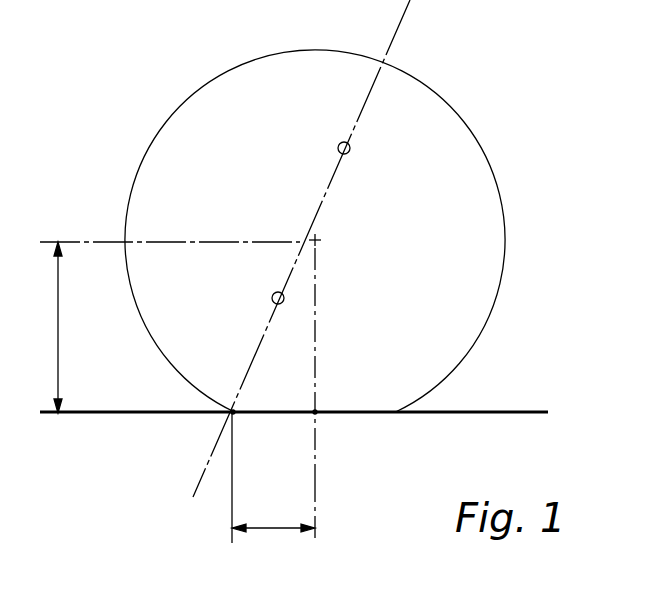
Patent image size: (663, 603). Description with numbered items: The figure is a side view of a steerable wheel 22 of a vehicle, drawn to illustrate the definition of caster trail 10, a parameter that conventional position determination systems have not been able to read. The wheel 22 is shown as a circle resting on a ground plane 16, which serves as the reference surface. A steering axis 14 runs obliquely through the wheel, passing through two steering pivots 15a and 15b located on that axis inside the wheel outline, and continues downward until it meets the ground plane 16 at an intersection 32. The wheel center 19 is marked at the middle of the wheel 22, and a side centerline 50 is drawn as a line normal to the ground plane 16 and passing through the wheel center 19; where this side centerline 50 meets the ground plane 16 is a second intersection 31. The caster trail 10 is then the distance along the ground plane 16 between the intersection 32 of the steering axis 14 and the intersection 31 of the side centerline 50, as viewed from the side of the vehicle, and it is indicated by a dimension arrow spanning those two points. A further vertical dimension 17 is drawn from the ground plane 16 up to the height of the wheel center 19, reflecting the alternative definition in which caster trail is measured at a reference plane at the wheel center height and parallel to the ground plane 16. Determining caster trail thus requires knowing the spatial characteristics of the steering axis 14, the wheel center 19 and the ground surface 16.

The caster trail 10 is at (275, 530).
The steering axis 14 is at (408, 8).
The steering pivot 15a is at (350, 148).
The steering pivot 15b is at (272, 298).
The ground plane 16 is at (512, 413).
The height of wheel center above ground 17 is at (56, 322).
The wheel center 19 is at (320, 238).
The wheel 22 is at (193, 97).
The intersection 31 is at (318, 414).
The intersection 32 is at (230, 414).
The side centerline 50 is at (318, 497).